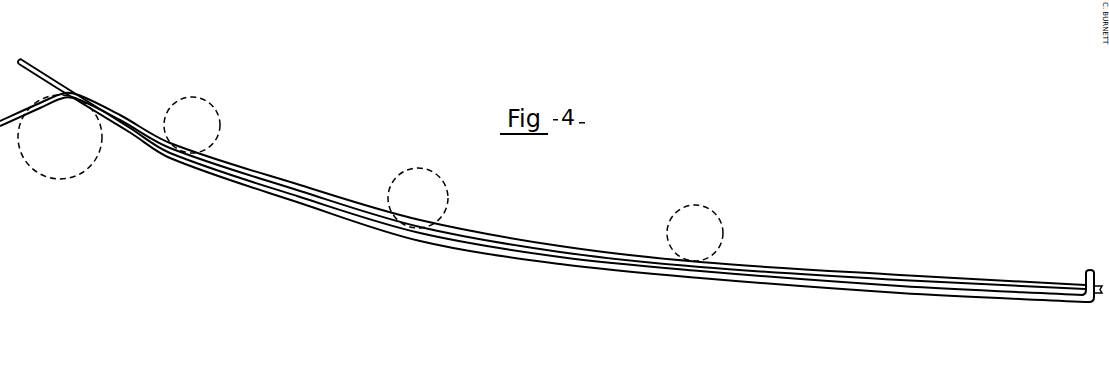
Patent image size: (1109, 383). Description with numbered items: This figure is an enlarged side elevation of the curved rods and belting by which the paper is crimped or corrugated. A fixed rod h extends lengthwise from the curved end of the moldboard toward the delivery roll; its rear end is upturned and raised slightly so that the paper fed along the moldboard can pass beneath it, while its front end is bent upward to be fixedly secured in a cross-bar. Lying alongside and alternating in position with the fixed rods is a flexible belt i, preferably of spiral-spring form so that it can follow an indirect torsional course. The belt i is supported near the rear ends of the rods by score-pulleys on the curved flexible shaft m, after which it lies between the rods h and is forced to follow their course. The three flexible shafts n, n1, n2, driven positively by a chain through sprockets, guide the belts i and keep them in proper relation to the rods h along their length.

The flexible shaft m is at (72, 148).
The flexible shaft n is at (192, 125).
The flexible shaft n1 is at (418, 198).
The flexible shaft n2 is at (695, 233).
The flexible belt i is at (576, 250).
The fixed rod h is at (578, 265).